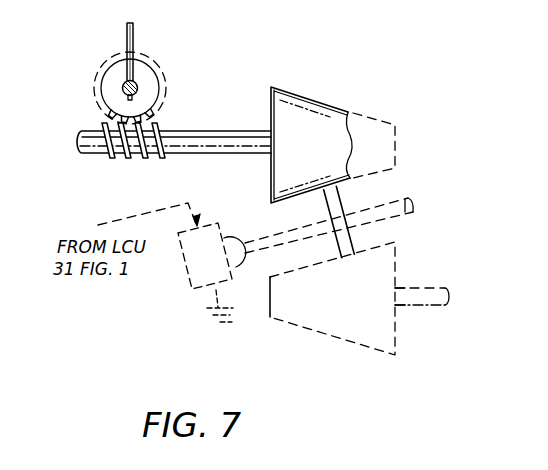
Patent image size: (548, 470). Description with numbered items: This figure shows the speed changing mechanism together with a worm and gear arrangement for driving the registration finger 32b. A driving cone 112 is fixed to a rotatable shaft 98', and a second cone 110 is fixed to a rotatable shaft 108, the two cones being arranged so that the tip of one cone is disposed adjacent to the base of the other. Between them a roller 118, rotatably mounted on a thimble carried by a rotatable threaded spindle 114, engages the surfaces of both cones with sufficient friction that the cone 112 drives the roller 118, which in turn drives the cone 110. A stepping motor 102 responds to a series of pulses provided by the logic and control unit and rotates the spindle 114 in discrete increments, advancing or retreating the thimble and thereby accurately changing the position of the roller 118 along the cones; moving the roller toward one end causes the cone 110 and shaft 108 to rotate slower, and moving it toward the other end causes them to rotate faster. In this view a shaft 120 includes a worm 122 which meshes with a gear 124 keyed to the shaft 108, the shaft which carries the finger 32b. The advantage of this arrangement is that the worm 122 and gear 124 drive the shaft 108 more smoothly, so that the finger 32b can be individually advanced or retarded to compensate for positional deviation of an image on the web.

The registration finger 32b is at (132, 38).
The rotatable shaft 108 is at (138, 86).
The gear 124 is at (93, 92).
The shaft 120 is at (197, 125).
The worm 122 is at (95, 157).
The cone 110 is at (305, 93).
The roller 118 is at (393, 236).
The threaded spindle 114 is at (393, 198).
The stepping motor 102 is at (200, 278).
The cone 112 is at (337, 322).
The rotatable shaft 98' is at (431, 283).